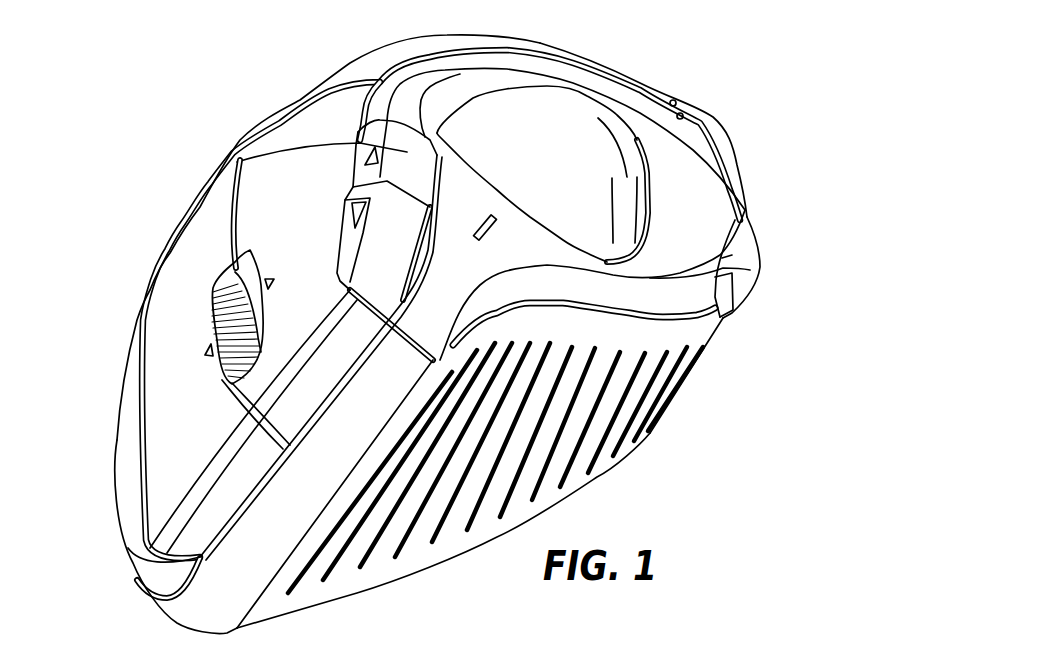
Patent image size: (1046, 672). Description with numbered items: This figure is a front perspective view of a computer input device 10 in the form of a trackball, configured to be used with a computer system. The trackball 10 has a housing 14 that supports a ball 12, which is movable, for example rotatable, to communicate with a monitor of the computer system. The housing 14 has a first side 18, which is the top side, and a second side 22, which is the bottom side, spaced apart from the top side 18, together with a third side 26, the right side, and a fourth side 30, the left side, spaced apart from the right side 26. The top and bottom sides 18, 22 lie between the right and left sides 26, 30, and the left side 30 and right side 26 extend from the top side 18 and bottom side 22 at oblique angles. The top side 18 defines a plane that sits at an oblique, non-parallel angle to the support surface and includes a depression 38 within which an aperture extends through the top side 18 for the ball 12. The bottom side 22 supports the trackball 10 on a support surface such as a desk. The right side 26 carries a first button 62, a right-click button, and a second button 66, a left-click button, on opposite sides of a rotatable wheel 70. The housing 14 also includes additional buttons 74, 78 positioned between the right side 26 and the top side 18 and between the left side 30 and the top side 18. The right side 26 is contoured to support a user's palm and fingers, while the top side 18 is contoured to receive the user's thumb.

The computer input device 10 is at (712, 47).
The ball 12 is at (627, 177).
The housing 14 is at (202, 603).
The first side 18 is at (713, 150).
The second side 22 is at (353, 595).
The third side 26 is at (297, 100).
The fourth side 30 is at (637, 423).
The depression 38 is at (695, 218).
The first button 62 is at (180, 435).
The second button 66 is at (345, 110).
The rotatable wheel 70 is at (205, 312).
The additional button 74 is at (375, 240).
The additional button 78 is at (748, 270).